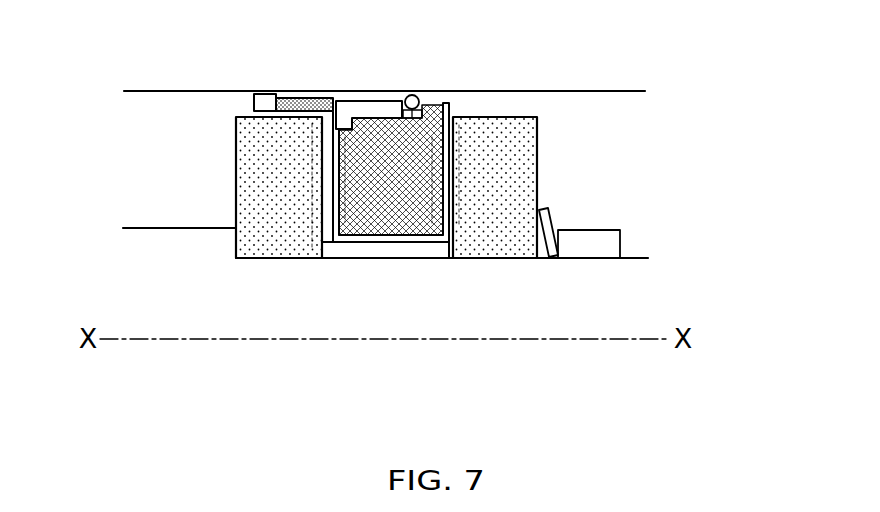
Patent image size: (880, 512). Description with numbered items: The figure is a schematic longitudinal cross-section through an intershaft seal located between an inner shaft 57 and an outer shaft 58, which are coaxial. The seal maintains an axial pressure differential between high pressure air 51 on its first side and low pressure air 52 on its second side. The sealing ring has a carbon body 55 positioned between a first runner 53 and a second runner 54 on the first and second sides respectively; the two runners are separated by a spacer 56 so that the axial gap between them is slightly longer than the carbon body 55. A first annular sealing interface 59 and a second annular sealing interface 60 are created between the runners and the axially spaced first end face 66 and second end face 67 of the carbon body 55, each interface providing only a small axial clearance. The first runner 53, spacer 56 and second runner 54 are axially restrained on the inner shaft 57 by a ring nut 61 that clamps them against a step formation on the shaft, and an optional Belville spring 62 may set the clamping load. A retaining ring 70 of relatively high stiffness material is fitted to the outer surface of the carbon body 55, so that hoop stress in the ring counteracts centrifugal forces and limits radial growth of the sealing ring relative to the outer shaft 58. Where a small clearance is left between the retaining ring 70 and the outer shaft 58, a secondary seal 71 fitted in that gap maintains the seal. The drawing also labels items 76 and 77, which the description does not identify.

The high pressure air 51 is at (169, 181).
The low pressure air 52 is at (580, 161).
The first runner 53 is at (247, 143).
The second runner 54 is at (522, 133).
The carbon body 55 is at (397, 208).
The spacer 56 is at (372, 247).
The inner shaft 57 is at (648, 258).
The outer shaft 58 is at (640, 90).
The first annular sealing interface 59 is at (307, 197).
The second annular sealing interface 60 is at (447, 122).
The ring nut 61 is at (610, 237).
The Belville spring 62 is at (555, 222).
The first end face 66 is at (320, 243).
The second end face 67 is at (448, 185).
The retaining ring 70 is at (365, 110).
The secondary seal 71 is at (413, 100).
The adhesive layer 76 is at (301, 100).
The terminal block 77 is at (266, 100).